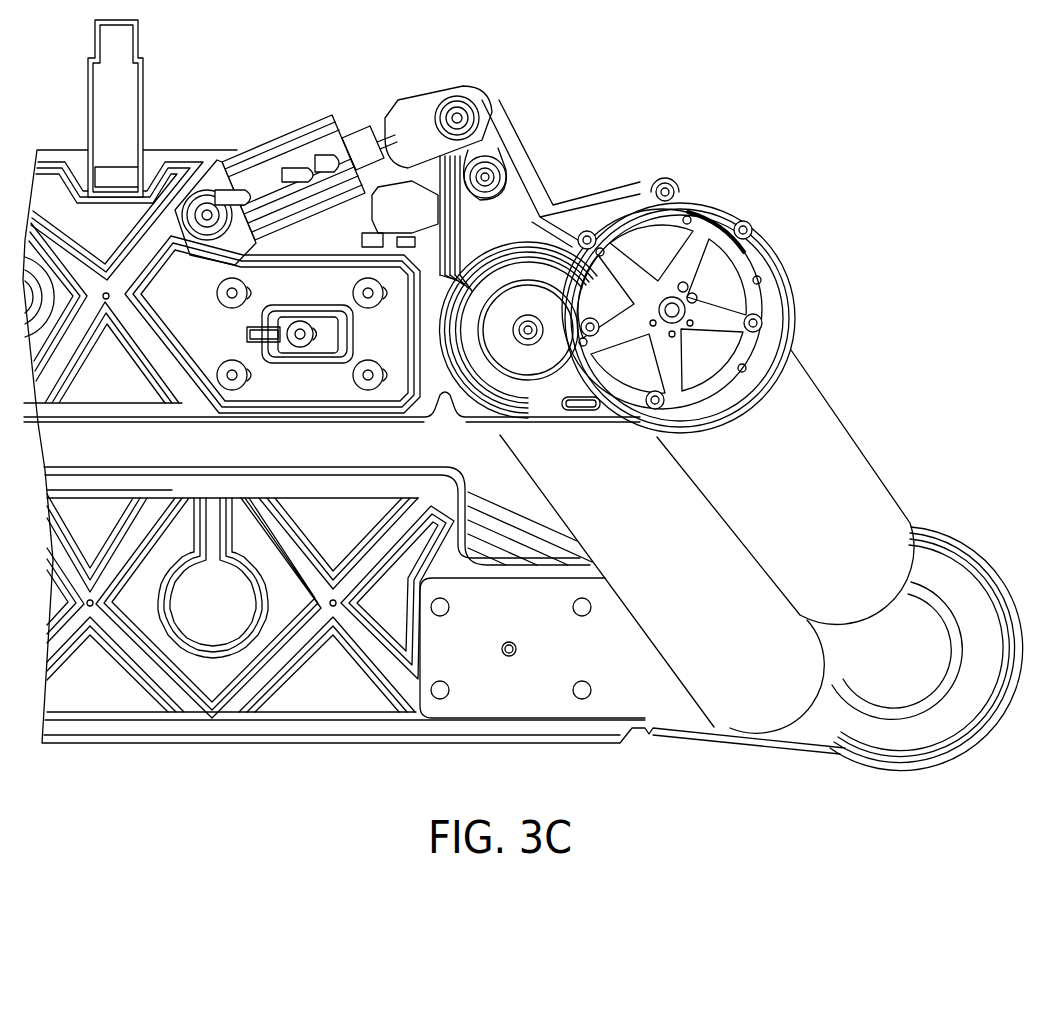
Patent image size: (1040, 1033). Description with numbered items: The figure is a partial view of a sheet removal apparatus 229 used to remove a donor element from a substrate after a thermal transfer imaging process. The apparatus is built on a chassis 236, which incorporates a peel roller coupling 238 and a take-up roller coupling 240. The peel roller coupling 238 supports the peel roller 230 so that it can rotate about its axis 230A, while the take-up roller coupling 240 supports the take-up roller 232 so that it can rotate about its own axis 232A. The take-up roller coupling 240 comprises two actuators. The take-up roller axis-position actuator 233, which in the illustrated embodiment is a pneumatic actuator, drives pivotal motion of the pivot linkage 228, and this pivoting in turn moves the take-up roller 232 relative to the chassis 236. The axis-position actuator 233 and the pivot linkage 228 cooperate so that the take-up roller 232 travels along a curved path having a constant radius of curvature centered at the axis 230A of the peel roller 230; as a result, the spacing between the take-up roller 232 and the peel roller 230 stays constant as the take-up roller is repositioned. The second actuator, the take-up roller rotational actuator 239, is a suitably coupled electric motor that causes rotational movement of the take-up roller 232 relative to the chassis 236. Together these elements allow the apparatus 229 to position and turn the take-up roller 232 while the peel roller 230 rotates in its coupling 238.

The sheet removal apparatus 229 is at (668, 127).
The take-up roller axis-position actuator 233 is at (368, 143).
The pivot linkage 228 is at (496, 174).
The chassis 236 is at (437, 378).
The peel roller axis 230A is at (527, 328).
The peel roller coupling 238 is at (457, 297).
The take-up roller coupling 240 is at (748, 254).
The take-up roller rotational actuator 239 is at (745, 302).
The take-up roller axis 232A is at (673, 300).
The take-up roller 232 is at (830, 430).
The peel roller 230 is at (633, 612).